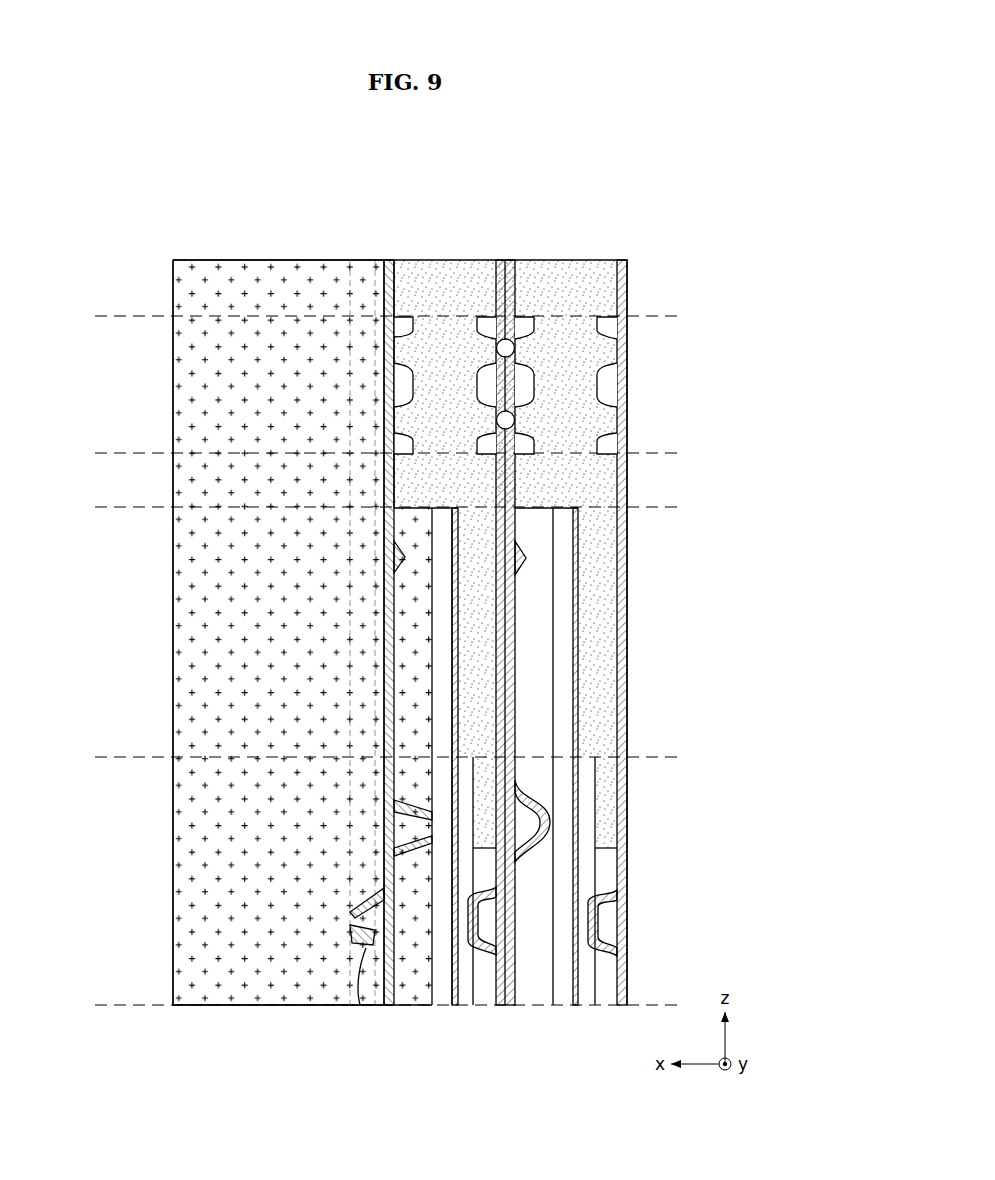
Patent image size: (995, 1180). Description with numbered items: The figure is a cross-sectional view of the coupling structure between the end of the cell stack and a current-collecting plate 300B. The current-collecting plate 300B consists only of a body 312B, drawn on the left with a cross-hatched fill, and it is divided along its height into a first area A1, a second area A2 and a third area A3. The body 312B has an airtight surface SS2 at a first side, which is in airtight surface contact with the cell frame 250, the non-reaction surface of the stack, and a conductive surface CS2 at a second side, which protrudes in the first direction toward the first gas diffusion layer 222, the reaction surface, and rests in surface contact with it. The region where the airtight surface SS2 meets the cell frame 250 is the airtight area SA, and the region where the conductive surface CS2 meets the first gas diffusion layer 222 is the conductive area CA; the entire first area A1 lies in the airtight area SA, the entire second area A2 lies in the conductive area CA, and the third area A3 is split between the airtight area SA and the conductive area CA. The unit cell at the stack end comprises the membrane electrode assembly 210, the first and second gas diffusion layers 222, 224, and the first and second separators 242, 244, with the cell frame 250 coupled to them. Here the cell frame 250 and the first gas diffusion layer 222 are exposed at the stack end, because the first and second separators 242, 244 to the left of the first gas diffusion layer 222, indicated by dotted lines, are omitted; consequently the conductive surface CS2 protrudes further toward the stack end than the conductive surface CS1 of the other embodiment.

The current-collecting plate 300B is at (196, 247).
The body 312B is at (288, 270).
The airtight surface SS2 is at (392, 338).
The cell frame 250 is at (446, 268).
The conductive surface CS1 is at (350, 970).
The conductive surface CS2 is at (430, 992).
The second separator 244 is at (371, 985).
The first separator 242 is at (410, 985).
The first gas diffusion layer 222 is at (442, 995).
The membrane electrode assembly 210 is at (455, 997).
The second gas diffusion layer 224 is at (468, 998).
The first area A1 is at (100, 317).
The second area A2 is at (100, 758).
The third area A3 is at (100, 454).
The airtight area SA is at (139, 454).
The conductive area CA is at (139, 508).